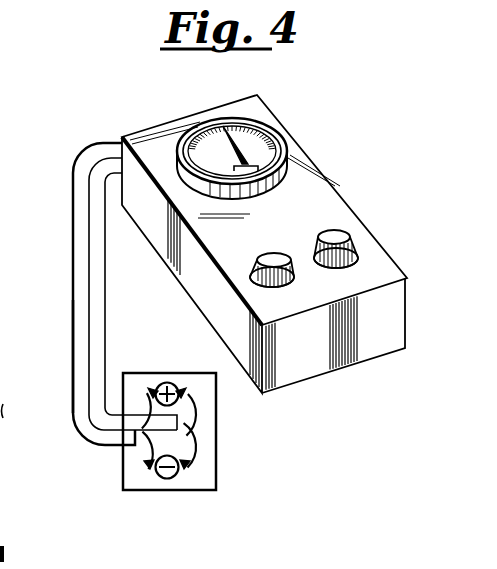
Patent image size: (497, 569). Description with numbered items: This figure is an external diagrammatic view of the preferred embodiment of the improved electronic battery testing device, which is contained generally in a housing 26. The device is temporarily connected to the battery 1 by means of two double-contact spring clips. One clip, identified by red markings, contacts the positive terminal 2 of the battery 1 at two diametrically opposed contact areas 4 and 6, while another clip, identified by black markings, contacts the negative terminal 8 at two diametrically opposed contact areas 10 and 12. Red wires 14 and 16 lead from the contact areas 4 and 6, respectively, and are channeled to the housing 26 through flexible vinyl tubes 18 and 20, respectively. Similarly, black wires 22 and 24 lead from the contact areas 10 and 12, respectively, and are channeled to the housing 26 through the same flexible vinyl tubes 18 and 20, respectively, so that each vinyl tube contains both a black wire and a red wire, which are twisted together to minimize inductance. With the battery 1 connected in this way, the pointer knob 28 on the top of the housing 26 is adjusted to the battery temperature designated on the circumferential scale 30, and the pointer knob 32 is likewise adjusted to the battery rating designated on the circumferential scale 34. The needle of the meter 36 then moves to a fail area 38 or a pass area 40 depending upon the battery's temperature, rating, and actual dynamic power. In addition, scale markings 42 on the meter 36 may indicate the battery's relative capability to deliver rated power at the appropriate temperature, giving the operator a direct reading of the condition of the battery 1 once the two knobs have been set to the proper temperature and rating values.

The battery 1 is at (216, 438).
The positive terminal 2 is at (167, 382).
The contact area 4 is at (152, 390).
The contact area 6 is at (183, 392).
The negative terminal 8 is at (168, 480).
The contact area 10 is at (156, 476).
The contact area 12 is at (180, 476).
The red wire 14 is at (148, 394).
The red wire 16 is at (195, 411).
The flexible vinyl tube 18 is at (76, 370).
The flexible vinyl tube 20 is at (92, 256).
The black wire 22 is at (142, 460).
The black wire 24 is at (197, 452).
The housing 26 is at (330, 187).
The pointer knob 28 is at (257, 256).
The circumferential scale 30 is at (251, 280).
The pointer knob 32 is at (348, 231).
The circumferential scale 34 is at (357, 243).
The meter 36 is at (288, 150).
The fail area 38 is at (176, 138).
The pass area 40 is at (277, 128).
The scale markings 42 is at (208, 140).